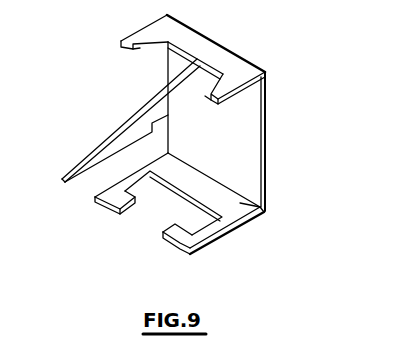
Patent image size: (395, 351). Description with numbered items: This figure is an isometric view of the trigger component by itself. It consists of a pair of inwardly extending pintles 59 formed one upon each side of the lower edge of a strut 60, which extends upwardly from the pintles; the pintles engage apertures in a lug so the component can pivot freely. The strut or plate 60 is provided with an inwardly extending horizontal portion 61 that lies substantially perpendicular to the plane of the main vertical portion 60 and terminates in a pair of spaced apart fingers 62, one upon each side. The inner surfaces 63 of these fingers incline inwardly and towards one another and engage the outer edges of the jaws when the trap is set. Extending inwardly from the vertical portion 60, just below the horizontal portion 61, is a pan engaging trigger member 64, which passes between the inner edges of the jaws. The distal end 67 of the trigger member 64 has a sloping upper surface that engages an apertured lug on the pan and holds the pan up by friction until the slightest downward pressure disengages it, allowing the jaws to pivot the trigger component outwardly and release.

The pintles 59 is at (200, 242).
The strut 60 is at (243, 183).
The horizontal portion 61 is at (203, 1).
The fingers 62 is at (129, 38).
The inner surfaces 63 is at (134, 51).
The pan engaging trigger member 64 is at (105, 150).
The distal end 67 is at (62, 175).